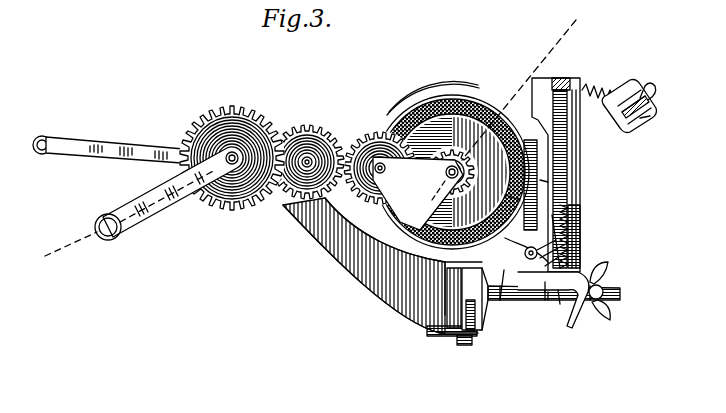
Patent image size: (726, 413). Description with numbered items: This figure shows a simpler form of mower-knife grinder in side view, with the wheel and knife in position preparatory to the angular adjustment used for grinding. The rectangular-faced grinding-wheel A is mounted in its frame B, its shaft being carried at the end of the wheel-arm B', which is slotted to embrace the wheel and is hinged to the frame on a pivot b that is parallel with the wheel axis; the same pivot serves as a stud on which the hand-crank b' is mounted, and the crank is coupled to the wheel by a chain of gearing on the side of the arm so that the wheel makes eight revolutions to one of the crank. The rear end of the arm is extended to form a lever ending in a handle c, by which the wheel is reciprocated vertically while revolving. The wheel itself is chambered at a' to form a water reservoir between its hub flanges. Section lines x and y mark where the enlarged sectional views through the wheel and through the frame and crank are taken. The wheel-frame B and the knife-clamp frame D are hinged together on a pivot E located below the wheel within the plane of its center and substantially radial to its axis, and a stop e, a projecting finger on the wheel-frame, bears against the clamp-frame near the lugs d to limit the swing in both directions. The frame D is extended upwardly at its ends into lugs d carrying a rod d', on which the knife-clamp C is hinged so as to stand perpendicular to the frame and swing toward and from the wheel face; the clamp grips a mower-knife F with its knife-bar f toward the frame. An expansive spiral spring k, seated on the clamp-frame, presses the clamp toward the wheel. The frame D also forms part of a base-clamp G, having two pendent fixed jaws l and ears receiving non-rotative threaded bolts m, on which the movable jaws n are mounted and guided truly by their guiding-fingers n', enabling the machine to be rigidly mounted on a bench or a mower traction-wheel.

The handle c is at (114, 140).
The wheel-arm B' is at (317, 177).
The hand-crank b' is at (169, 193).
The section line y is at (124, 218).
The pivot b is at (326, 148).
The grinding-wheel frame B is at (415, 267).
The grinding-wheel A is at (510, 105).
The chamber a' is at (433, 193).
The section line x is at (521, 81).
The knife-clamp C is at (556, 161).
The mower-knife F is at (530, 185).
The knife-bar f is at (537, 181).
The hub a is at (515, 196).
The stop e is at (524, 253).
The expansive spiral spring k is at (560, 238).
The rod or bar d' is at (582, 241).
The lugs or ears d is at (582, 236).
The threaded bolt m is at (622, 294).
The movable jaws n is at (592, 304).
The guiding-finger n' is at (546, 308).
The base-clamp G is at (526, 296).
The knife-clamp frame D is at (508, 304).
The pivot E is at (463, 349).
The fixed jaws l is at (475, 299).